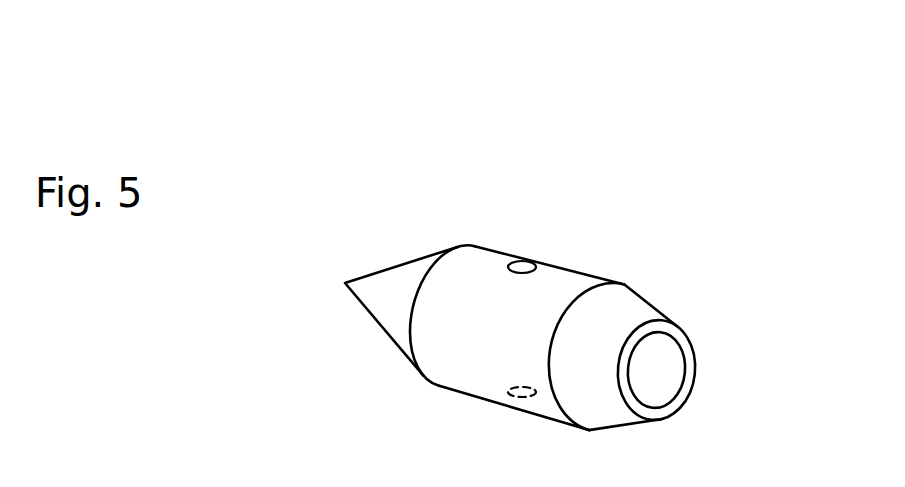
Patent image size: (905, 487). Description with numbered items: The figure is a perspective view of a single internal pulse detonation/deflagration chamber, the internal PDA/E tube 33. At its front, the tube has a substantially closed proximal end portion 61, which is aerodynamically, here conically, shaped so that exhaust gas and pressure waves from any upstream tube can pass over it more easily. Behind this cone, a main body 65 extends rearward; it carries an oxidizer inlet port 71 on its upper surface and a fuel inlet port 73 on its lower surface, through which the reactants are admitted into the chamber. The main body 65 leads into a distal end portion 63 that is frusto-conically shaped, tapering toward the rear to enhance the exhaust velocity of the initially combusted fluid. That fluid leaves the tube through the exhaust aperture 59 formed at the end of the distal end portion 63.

The internal PDA/E tube 33 is at (735, 185).
The proximal end portion 61 is at (363, 250).
The main body 65 is at (562, 250).
The oxidizer inlet port 71 is at (521, 260).
The fuel inlet port 73 is at (520, 398).
The distal end portion 63 is at (690, 310).
The exhaust aperture 59 is at (703, 392).